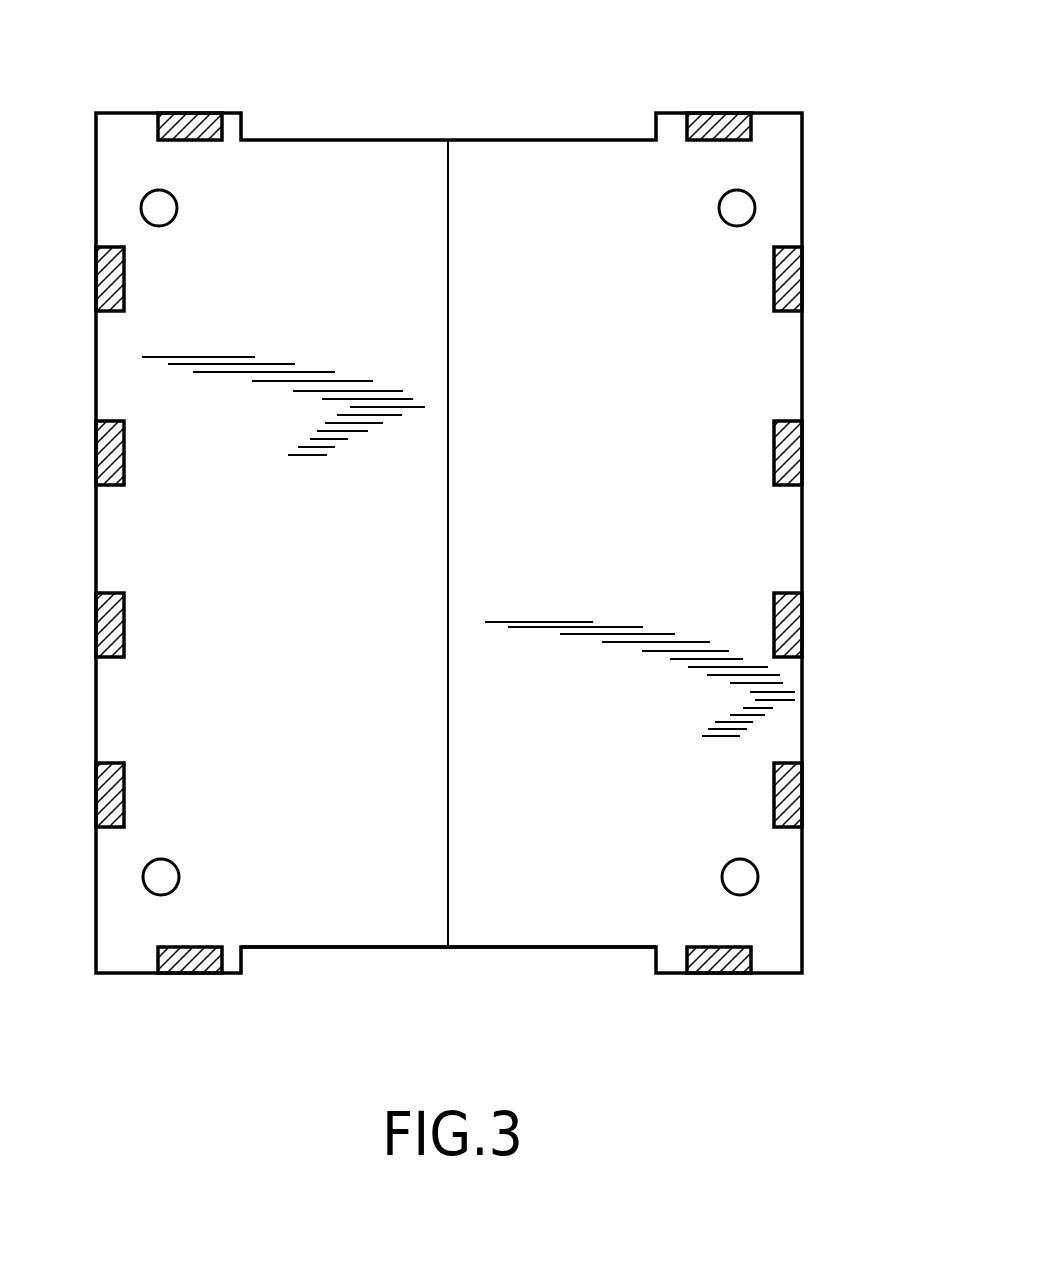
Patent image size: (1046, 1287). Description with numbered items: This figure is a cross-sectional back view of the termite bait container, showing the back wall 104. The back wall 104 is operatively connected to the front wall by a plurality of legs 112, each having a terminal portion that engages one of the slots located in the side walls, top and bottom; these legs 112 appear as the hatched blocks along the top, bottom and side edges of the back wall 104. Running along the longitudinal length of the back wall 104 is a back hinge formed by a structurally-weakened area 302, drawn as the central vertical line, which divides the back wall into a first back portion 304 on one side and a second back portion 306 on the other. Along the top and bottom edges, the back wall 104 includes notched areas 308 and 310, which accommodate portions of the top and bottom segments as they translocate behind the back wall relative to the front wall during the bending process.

The notched area 308 is at (506, 102).
The legs 112 is at (716, 113).
The structurally-weakened area 302 is at (448, 222).
The back wall 104 is at (313, 293).
The first back portion 304 is at (298, 719).
The second back portion 306 is at (608, 726).
The notched area 310 is at (461, 984).